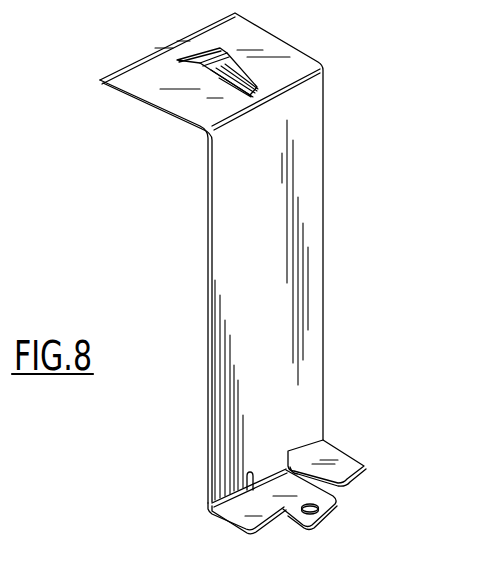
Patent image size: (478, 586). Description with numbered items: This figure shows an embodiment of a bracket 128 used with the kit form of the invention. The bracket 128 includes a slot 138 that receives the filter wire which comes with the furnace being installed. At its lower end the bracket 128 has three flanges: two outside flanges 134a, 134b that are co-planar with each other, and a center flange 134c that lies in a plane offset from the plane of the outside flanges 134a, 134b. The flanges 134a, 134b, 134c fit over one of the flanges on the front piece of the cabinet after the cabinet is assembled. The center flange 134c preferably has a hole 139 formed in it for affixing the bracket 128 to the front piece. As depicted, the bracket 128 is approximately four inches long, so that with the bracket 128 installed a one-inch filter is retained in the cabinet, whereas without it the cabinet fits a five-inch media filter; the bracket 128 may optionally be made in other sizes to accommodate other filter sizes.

The bracket 128 is at (302, 215).
The slot 138 is at (200, 63).
The outside flange 134a is at (348, 468).
The outside flange 134b is at (244, 510).
The center flange 134c is at (340, 507).
The hole 139 is at (317, 507).